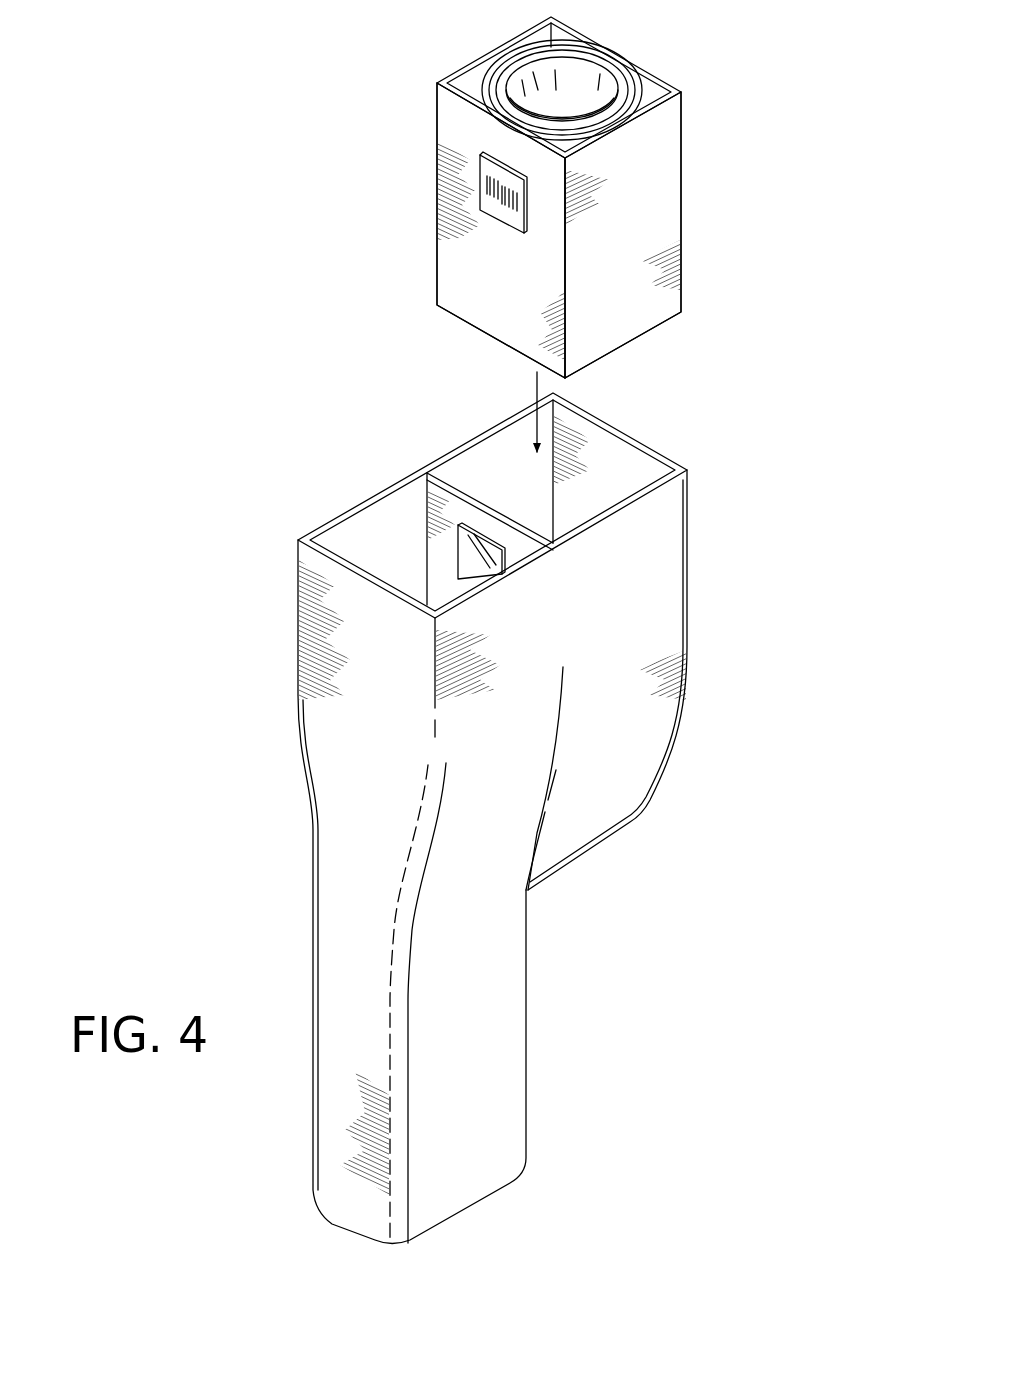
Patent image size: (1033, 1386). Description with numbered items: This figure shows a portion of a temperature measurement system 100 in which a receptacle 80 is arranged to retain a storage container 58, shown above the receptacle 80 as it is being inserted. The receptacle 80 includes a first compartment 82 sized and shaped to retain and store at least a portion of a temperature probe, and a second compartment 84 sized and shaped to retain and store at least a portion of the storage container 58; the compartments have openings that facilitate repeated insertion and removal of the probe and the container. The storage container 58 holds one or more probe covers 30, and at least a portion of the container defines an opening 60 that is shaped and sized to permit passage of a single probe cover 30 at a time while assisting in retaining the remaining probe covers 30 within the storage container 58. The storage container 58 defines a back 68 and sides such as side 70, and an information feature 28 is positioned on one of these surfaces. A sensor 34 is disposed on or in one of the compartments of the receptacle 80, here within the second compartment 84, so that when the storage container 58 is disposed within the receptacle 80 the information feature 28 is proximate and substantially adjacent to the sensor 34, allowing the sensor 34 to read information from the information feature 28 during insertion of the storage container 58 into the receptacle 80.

The temperature measurement system 100 is at (273, 346).
The storage container 58 is at (698, 150).
The probe cover 30 is at (638, 78).
The opening 60 is at (670, 88).
The side 70 is at (480, 286).
The back 68 is at (634, 310).
The information feature 28 is at (507, 218).
The receptacle 80 is at (546, 1043).
The first compartment 82 is at (386, 543).
The second compartment 84 is at (493, 468).
The sensor 34 is at (497, 560).